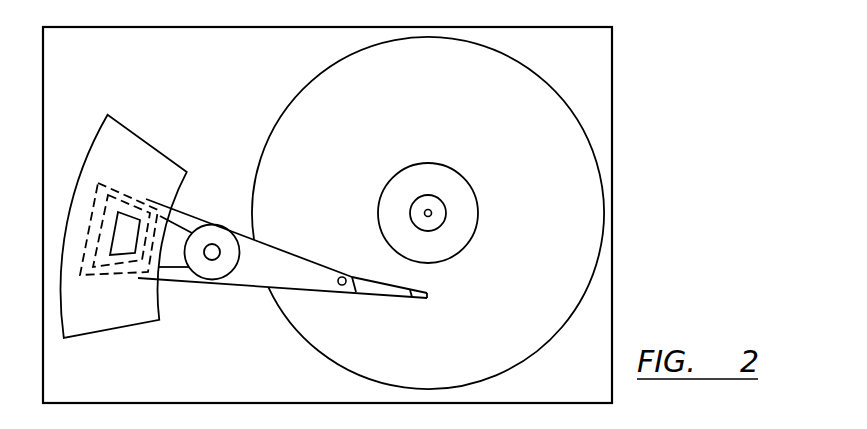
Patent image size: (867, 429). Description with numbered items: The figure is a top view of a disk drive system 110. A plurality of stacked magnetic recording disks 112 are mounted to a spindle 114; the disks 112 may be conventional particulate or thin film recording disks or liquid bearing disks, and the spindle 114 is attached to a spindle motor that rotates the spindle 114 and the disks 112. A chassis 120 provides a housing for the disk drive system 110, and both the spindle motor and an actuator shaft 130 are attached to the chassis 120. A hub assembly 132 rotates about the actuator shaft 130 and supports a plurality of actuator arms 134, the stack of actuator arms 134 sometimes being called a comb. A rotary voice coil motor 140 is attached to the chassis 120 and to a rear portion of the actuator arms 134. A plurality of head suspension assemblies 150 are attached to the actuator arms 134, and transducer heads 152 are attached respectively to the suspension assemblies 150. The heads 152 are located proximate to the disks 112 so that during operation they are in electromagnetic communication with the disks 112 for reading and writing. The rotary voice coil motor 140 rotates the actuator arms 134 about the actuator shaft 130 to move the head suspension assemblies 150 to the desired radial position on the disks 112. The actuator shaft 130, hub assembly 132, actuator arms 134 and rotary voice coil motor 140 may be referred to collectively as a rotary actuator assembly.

The disk drive system 110 is at (647, 98).
The magnetic recording disk 112 is at (437, 122).
The spindle 114 is at (432, 196).
The chassis 120 is at (256, 385).
The actuator shaft 130 is at (212, 260).
The hub assembly 132 is at (216, 235).
The actuator arm 134 is at (288, 258).
The rotary voice coil motor 140 is at (106, 137).
The head suspension assembly 150 is at (372, 289).
The transducer head 152 is at (427, 298).